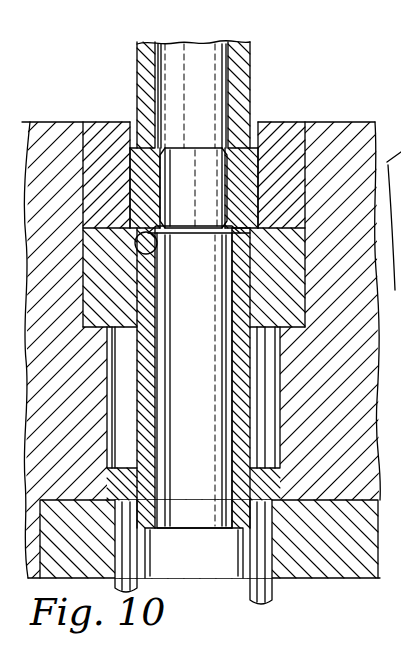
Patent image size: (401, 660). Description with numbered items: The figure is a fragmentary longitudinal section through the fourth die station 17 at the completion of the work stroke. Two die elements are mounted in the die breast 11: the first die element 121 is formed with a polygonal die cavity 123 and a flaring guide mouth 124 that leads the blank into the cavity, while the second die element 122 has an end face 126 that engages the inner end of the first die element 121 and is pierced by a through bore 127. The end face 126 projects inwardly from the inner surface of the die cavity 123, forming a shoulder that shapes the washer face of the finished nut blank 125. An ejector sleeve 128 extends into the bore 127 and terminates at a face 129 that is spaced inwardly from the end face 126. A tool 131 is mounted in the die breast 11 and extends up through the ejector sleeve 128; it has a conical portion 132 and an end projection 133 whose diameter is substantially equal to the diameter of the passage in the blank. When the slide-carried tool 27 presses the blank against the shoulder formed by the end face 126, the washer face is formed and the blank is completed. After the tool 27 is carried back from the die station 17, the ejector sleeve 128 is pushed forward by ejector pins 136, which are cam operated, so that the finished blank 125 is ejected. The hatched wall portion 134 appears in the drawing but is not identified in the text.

The die breast 11 is at (360, 122).
The fourth die station 17 is at (258, 100).
The tool 27 is at (243, 52).
The first die element 121 is at (285, 122).
The second die element 122 is at (303, 260).
The polygonal die cavity 123 is at (258, 178).
The flaring guide mouth 124 is at (137, 140).
The nut blank 125 is at (137, 200).
The end face 126 is at (252, 232).
The through bore 127 is at (250, 290).
The ejector sleeve 128 is at (248, 380).
The face 129 is at (228, 234).
The tool 131 is at (204, 417).
The conical portion 132 is at (140, 243).
The end projection 133 is at (207, 196).
The left sleeve wall 134 is at (140, 298).
The ejector pins 136 is at (140, 585).